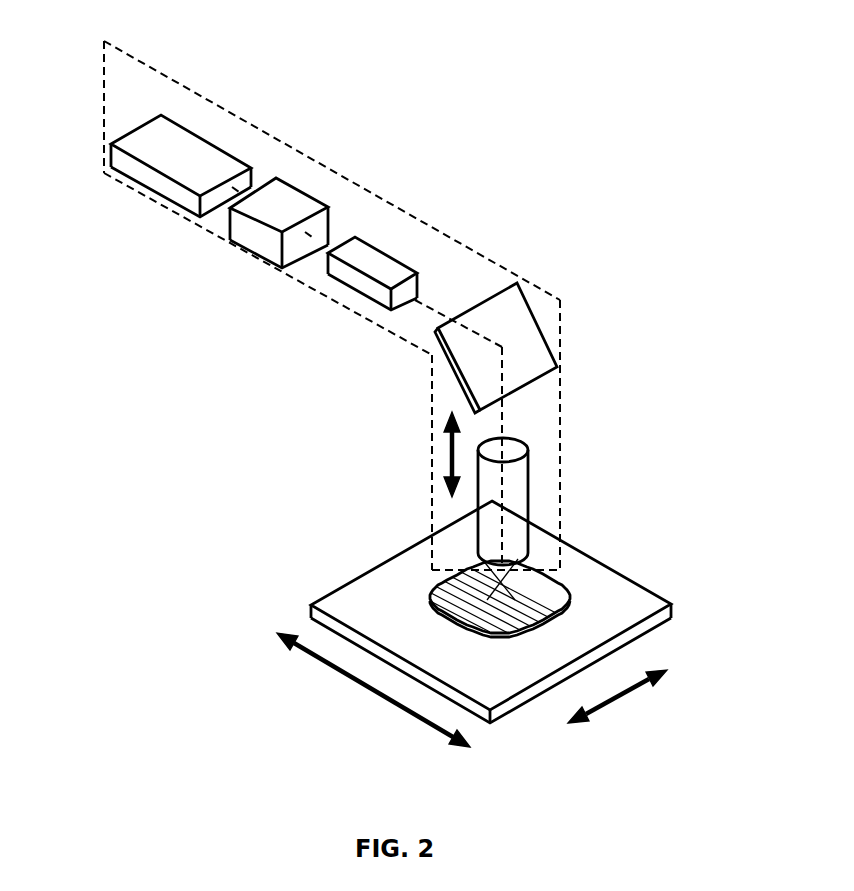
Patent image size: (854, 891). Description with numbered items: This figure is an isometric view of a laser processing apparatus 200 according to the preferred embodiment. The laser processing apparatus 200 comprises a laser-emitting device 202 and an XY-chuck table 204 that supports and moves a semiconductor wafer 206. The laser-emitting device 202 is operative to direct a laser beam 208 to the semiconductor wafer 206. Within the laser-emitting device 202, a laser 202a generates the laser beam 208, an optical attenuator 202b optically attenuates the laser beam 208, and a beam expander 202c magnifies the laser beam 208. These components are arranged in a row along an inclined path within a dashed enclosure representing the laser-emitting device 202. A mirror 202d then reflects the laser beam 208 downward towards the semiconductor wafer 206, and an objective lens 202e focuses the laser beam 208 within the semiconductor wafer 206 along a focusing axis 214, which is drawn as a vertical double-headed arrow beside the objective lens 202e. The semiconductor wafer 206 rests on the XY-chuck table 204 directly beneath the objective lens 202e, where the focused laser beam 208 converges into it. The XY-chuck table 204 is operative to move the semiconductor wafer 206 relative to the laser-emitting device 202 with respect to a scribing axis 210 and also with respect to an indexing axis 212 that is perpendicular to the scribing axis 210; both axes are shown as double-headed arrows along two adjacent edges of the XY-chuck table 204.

The laser processing apparatus 200 is at (572, 110).
The laser-emitting device 202 is at (347, 328).
The laser 202a is at (151, 216).
The optical attenuator 202b is at (239, 275).
The beam expander 202c is at (342, 303).
The mirror 202d is at (553, 315).
The objective lens 202e is at (553, 475).
The XY-chuck table 204 is at (344, 602).
The semiconductor wafer 206 is at (406, 589).
The laser beam 208 is at (522, 578).
The scribing axis 210 is at (342, 665).
The indexing axis 212 is at (617, 703).
The focusing axis 214 is at (448, 448).